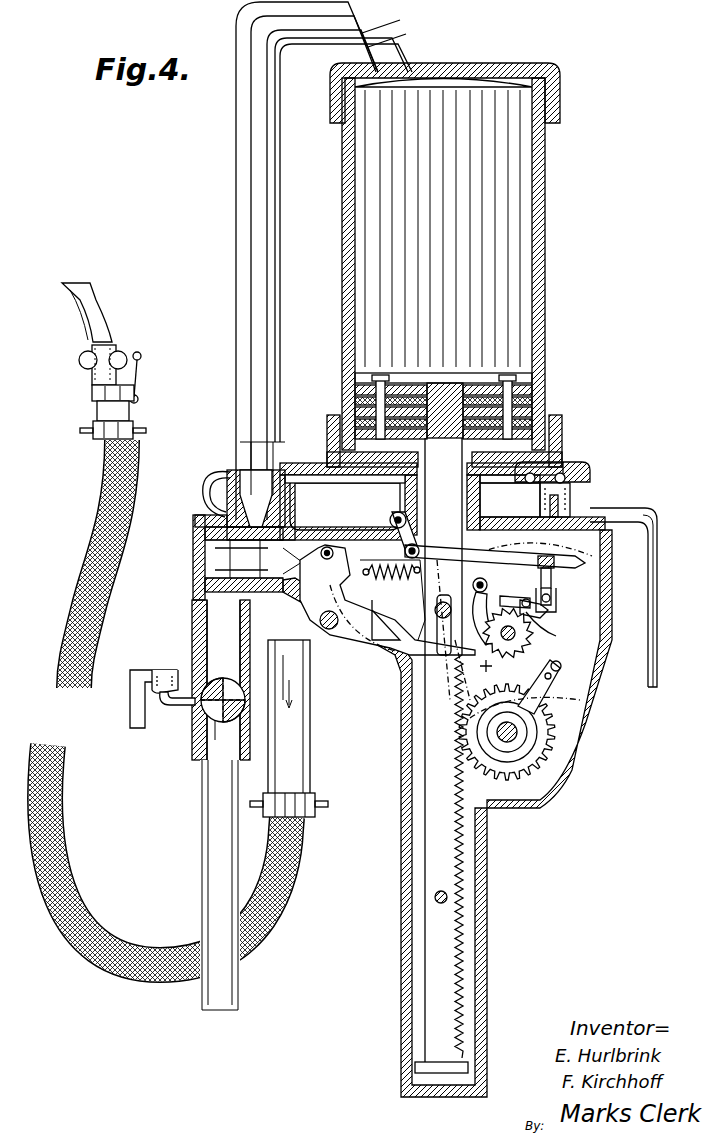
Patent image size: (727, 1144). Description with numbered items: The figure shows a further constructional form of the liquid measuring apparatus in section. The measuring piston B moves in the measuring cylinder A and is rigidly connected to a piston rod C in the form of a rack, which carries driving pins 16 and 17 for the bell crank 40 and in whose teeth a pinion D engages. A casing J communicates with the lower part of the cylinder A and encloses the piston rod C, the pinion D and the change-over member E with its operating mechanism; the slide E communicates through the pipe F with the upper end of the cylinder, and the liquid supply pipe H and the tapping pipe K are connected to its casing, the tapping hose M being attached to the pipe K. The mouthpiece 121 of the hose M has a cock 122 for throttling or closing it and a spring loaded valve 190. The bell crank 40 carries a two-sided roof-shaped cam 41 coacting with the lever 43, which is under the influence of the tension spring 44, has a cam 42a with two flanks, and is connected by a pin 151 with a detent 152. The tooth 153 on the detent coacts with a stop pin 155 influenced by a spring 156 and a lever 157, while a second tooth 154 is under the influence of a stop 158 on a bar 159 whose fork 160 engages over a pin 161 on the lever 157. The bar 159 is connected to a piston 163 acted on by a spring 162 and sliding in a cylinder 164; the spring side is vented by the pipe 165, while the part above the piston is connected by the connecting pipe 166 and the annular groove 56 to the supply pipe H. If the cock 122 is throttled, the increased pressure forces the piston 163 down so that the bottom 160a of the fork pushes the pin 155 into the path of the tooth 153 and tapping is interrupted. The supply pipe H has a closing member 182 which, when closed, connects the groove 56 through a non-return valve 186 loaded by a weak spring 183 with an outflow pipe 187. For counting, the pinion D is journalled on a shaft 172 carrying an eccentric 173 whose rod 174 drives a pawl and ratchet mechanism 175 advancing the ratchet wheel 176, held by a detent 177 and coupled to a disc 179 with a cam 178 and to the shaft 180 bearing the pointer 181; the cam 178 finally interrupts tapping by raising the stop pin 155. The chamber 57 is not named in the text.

The pipe F is at (236, 150).
The measuring cylinder A is at (546, 208).
The measuring piston B is at (472, 388).
The chamber 57 is at (322, 501).
The connecting pipe 166 is at (318, 479).
The spring 162 is at (540, 505).
The piston 163 is at (582, 472).
The cylinder 164 is at (583, 503).
The tooth 153 is at (516, 556).
The piston rod C is at (430, 732).
The pinion D is at (552, 770).
The casing J is at (532, 797).
The cam 178 is at (384, 686).
The bell crank 40 is at (360, 660).
The change-over member E is at (247, 557).
The annular groove 56 is at (205, 604).
The cam 41 is at (372, 620).
The tension spring 44 is at (388, 559).
The lever 43 is at (418, 590).
The cam 42a is at (370, 621).
The driving pin 16 is at (439, 630).
The pointer 181 is at (450, 670).
The ratchet wheel 176 is at (482, 667).
The pin 151 is at (393, 517).
The detent 152 is at (446, 546).
The stop 158 is at (590, 562).
The bar 159 is at (560, 578).
The bottom of fork 160a is at (548, 592).
The pin 161 is at (552, 600).
The fork 160 is at (550, 615).
The stop pin 155 is at (538, 610).
The lever 157 is at (556, 636).
The tooth 154 is at (600, 540).
The spring 156 is at (473, 583).
The detent 177 is at (472, 604).
The shaft 180 is at (515, 636).
The eccentric 173 is at (540, 743).
The disc 179 is at (540, 700).
The rod 174 is at (578, 704).
The shaft 172 is at (470, 748).
The pawl and ratchet mechanism 175 is at (606, 650).
The pipe 165 is at (650, 624).
The driving pin 17 is at (441, 903).
The tapping hose M is at (92, 566).
The mouthpiece 121 is at (102, 312).
The spring loaded valve 190 is at (94, 383).
The cock 122 is at (93, 410).
The supply pipe H is at (205, 640).
The closing member 182 is at (192, 722).
The outflow pipe 187 is at (130, 712).
The spring 183 is at (164, 670).
The non-return valve 186 is at (172, 708).
The pipe K is at (303, 722).